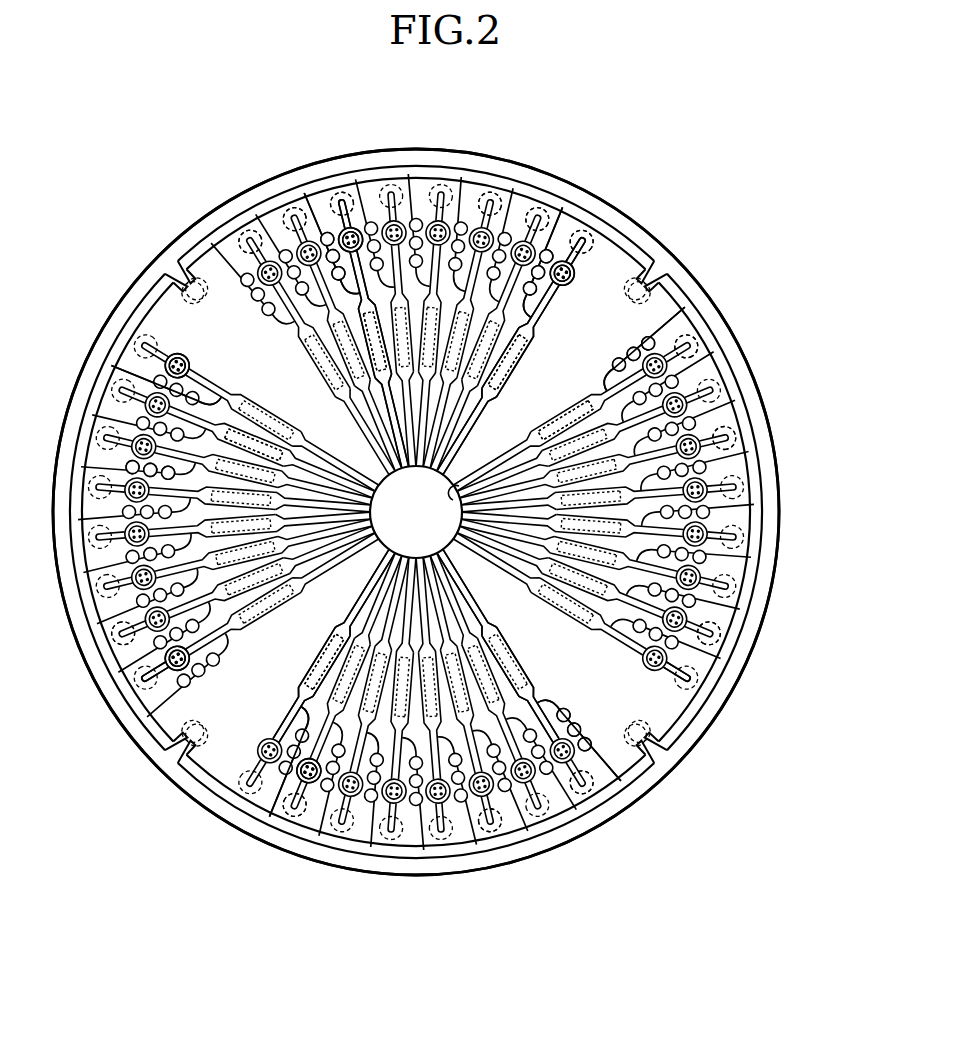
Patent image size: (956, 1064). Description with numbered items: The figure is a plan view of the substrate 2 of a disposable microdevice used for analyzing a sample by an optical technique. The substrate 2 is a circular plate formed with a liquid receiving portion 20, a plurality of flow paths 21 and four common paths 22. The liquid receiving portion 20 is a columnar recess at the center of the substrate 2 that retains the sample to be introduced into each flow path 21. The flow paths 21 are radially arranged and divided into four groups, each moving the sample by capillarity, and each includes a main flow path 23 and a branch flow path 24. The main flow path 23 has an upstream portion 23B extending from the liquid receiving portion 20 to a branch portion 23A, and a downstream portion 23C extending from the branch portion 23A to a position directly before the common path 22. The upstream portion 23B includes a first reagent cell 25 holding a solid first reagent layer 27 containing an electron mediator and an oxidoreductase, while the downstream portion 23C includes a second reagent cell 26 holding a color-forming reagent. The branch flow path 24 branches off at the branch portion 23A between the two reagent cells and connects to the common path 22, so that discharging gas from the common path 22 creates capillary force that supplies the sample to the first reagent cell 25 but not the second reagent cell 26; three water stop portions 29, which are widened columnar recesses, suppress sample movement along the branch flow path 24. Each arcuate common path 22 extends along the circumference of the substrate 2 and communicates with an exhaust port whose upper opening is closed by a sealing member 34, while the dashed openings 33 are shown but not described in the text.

The substrate 2 is at (658, 192).
The liquid receiving portion 20 is at (438, 492).
The flow path 21 is at (232, 386).
The common path 22 is at (440, 165).
The main flow path 23 is at (347, 203).
The branch portion 23A is at (494, 634).
The upstream portion 23B is at (364, 583).
The downstream portion 23C is at (672, 673).
The branch flow path 24 is at (494, 193).
The first reagent cell 25 is at (258, 432).
The second reagent cell 26 is at (181, 355).
The first reagent layer 27 is at (285, 452).
The water stop portion 29 is at (207, 397).
The opening 33 is at (262, 230).
The sealing member 34 is at (186, 283).